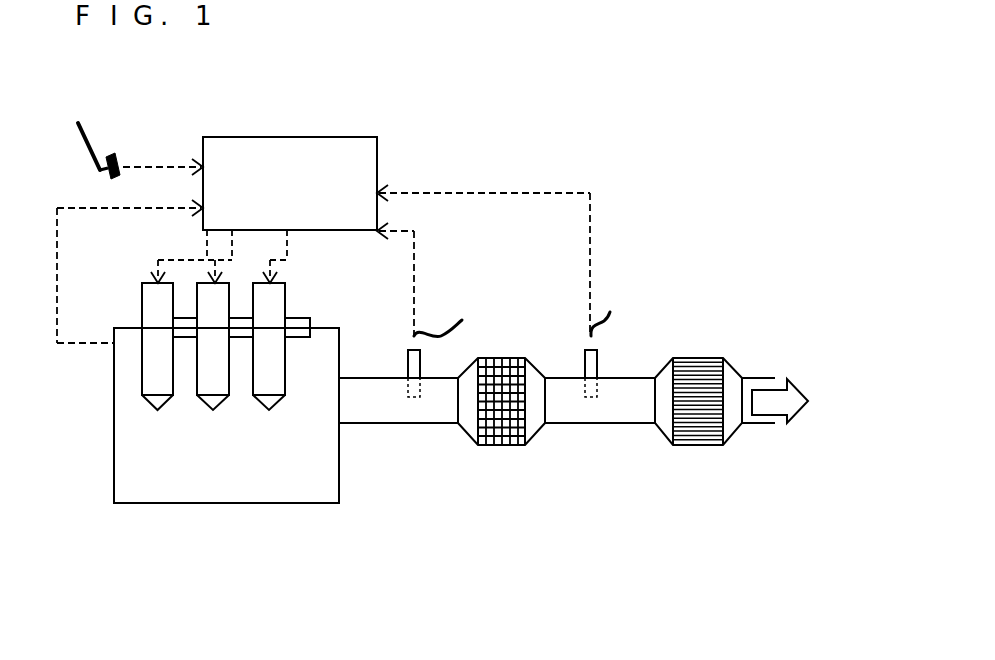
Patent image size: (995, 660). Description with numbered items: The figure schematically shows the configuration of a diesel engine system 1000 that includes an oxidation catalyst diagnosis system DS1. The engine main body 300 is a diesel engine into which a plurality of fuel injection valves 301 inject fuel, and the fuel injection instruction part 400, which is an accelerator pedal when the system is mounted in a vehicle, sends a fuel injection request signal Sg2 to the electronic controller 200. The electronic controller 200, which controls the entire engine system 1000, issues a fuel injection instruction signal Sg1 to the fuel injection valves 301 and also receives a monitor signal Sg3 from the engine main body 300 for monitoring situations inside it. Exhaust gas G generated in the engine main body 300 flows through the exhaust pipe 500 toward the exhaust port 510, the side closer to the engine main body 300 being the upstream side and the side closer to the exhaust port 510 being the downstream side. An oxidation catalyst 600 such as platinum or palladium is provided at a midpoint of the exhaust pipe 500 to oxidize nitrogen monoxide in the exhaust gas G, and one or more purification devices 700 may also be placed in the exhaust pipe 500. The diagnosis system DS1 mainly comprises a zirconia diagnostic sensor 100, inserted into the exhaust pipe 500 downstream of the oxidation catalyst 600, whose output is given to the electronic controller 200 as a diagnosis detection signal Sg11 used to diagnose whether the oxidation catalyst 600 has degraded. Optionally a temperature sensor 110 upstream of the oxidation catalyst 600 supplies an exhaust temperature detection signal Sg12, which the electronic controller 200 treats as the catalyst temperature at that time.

The diesel engine system 1000 is at (141, 578).
The diagnostic sensor 100 is at (608, 347).
The temperature sensor 110 is at (428, 360).
The electronic controller 200 is at (323, 136).
The engine main body 300 is at (339, 482).
The fuel injection valves 301 is at (157, 300).
The fuel injection instruction part 400 is at (87, 134).
The exhaust pipe 500 is at (437, 424).
The exhaust port 510 is at (763, 377).
The oxidation catalyst 600 is at (512, 446).
The purification device 700 is at (697, 446).
The exhaust gas G is at (800, 414).
The oxidation catalyst diagnosis system DS1 is at (683, 302).
The fuel injection instruction signal Sg1 is at (207, 245).
The fuel injection request signal Sg2 is at (157, 166).
The monitor signal Sg3 is at (57, 318).
The diagnosis detection signal Sg11 is at (591, 287).
The exhaust temperature detection signal Sg12 is at (415, 262).